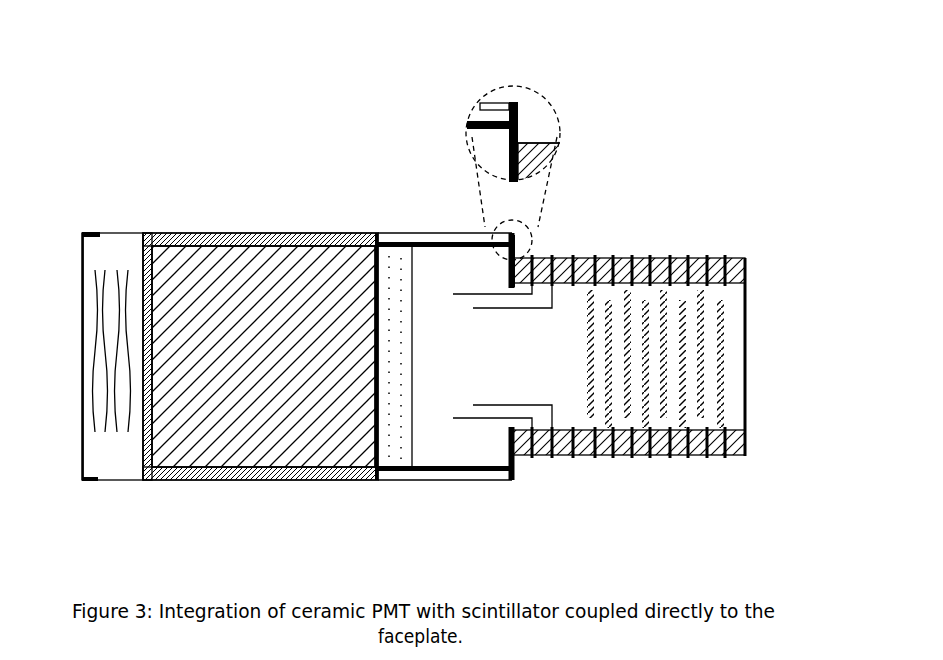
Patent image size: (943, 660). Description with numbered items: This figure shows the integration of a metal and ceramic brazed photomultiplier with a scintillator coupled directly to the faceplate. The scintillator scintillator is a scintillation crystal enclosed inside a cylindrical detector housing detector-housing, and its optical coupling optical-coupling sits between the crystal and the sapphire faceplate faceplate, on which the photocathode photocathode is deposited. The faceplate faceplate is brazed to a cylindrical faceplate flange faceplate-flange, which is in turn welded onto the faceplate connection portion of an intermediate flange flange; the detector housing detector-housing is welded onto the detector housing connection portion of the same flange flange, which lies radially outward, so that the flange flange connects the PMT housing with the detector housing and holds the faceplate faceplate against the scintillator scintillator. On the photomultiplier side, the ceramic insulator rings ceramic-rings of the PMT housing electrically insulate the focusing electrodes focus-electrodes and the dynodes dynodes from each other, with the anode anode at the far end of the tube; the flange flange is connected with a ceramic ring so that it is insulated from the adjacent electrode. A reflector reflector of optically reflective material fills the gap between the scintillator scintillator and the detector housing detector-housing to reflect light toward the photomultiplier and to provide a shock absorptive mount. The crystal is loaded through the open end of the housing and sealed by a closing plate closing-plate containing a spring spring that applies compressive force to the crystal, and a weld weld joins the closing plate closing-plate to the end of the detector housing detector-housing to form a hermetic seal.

The closing plate closing-plate is at (82, 275).
The element weld is at (90, 232).
The element spring is at (113, 277).
The detector housing detector-housing is at (247, 233).
The element scintillator is at (207, 447).
The reflector and shock mounting reflector is at (270, 470).
The optical coupling optical-coupling is at (376, 478).
The element faceplate is at (377, 233).
The element photocathode is at (410, 245).
The faceplate flange faceplate-flange is at (453, 481).
The element flange is at (516, 243).
The ceramic insulator rings ceramic-rings is at (720, 455).
The focusing electrodes focus-electrodes is at (484, 418).
The element dynodes is at (727, 258).
The element anode is at (746, 257).